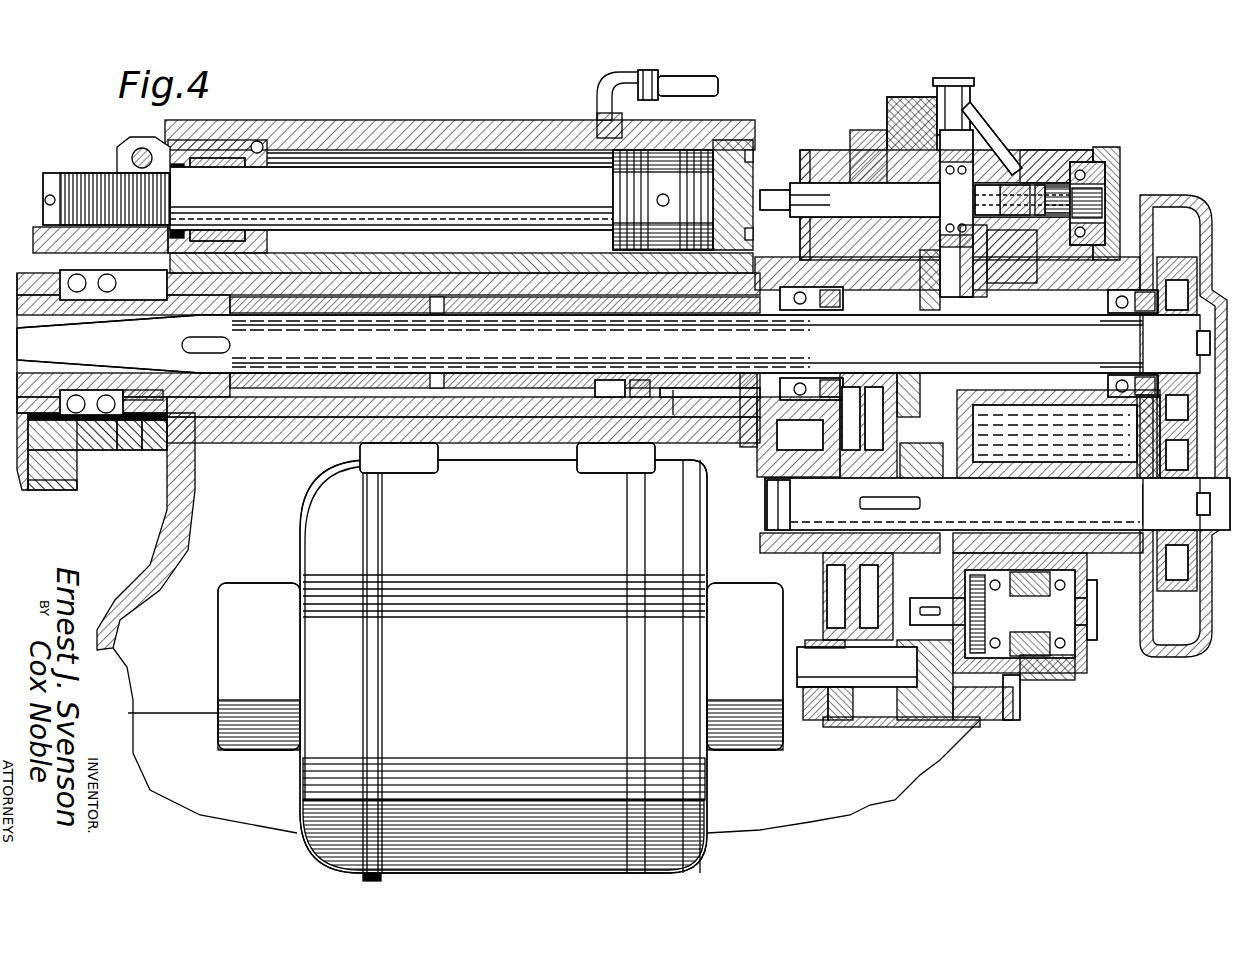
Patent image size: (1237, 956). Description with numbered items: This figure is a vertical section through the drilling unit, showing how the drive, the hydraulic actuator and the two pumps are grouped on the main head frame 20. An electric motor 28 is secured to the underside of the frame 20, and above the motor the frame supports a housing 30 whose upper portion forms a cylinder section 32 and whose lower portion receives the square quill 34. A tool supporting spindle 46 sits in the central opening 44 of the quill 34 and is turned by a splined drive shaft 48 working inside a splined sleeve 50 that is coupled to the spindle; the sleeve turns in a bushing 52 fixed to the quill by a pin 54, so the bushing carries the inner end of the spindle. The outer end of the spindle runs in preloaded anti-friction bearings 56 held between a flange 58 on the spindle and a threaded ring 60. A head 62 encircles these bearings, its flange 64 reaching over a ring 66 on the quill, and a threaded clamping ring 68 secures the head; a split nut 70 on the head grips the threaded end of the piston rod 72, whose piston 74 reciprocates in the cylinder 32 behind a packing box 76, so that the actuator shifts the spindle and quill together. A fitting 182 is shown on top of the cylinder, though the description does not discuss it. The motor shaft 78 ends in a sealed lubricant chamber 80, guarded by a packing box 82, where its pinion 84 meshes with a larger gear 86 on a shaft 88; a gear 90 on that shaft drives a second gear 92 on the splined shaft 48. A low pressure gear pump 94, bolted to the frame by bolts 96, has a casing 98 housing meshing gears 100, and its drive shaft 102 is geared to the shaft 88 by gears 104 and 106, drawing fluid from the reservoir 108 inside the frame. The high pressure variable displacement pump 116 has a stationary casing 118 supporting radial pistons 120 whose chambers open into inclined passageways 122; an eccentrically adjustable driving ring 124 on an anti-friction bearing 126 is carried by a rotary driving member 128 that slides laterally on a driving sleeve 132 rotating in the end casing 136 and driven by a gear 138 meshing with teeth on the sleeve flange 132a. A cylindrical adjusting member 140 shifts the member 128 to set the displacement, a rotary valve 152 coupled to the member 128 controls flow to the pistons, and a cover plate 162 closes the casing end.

The main head frame 20 is at (1140, 270).
The electric motor 28 is at (313, 517).
The frame or housing 30 is at (485, 118).
The cylinder section 32 is at (410, 122).
The spindle supporting member or quill 34 is at (215, 408).
The central opening 44 is at (760, 300).
The tool supporting spindle 46 is at (482, 380).
The splined drive shaft 48 is at (577, 357).
The splined sleeve 50 is at (647, 387).
The bushing 52 is at (623, 380).
The pin 54 is at (673, 413).
The anti-friction bearings 56 is at (75, 425).
The flange 58 is at (27, 402).
The threaded ring 60 is at (128, 422).
The head 62 is at (33, 487).
The flange 64 is at (150, 425).
The ring 66 is at (112, 428).
The threaded clamping ring 68 is at (30, 272).
The split nut 70 is at (123, 162).
The piston rod 72 is at (278, 180).
The piston 74 is at (690, 165).
The packing box 76 is at (222, 150).
The motor shaft 78 is at (820, 670).
The lubricant retaining chamber 80 is at (923, 700).
The packing box 82 is at (840, 720).
The pinion or gear 84 is at (887, 700).
The larger gear 86 is at (880, 587).
The shaft 88 is at (1100, 513).
The gear 90 is at (1180, 600).
The second gear 92 is at (1062, 437).
The low pressure pumping mechanism 94 is at (1047, 687).
The bolts 96 is at (1013, 700).
The casing 98 is at (1067, 673).
The meshing gears 100 is at (1033, 680).
The drive shaft 102 is at (1000, 612).
The gear 104 is at (927, 703).
The gear 106 is at (930, 455).
The reservoir 108 is at (958, 435).
The high pressure variable displacement pump 116 is at (1015, 115).
The stationary support or casing 118 is at (990, 100).
The reciprocable pistons 120 is at (950, 115).
The inclined radial passageways 122 is at (967, 177).
The eccentrically adjustable driving ring 124 is at (967, 232).
The anti-friction bearing 126 is at (940, 225).
The rotary driving member 128 is at (1010, 148).
The rotary driving sleeve 132 is at (858, 172).
The flange 132a is at (898, 107).
The end casing 136 is at (862, 138).
The gear 138 is at (900, 285).
The cylindrical adjusting member 140 is at (850, 200).
The rotary valve 152 is at (1033, 222).
The cover plate 162 is at (1122, 160).
The fitting 182 is at (683, 80).